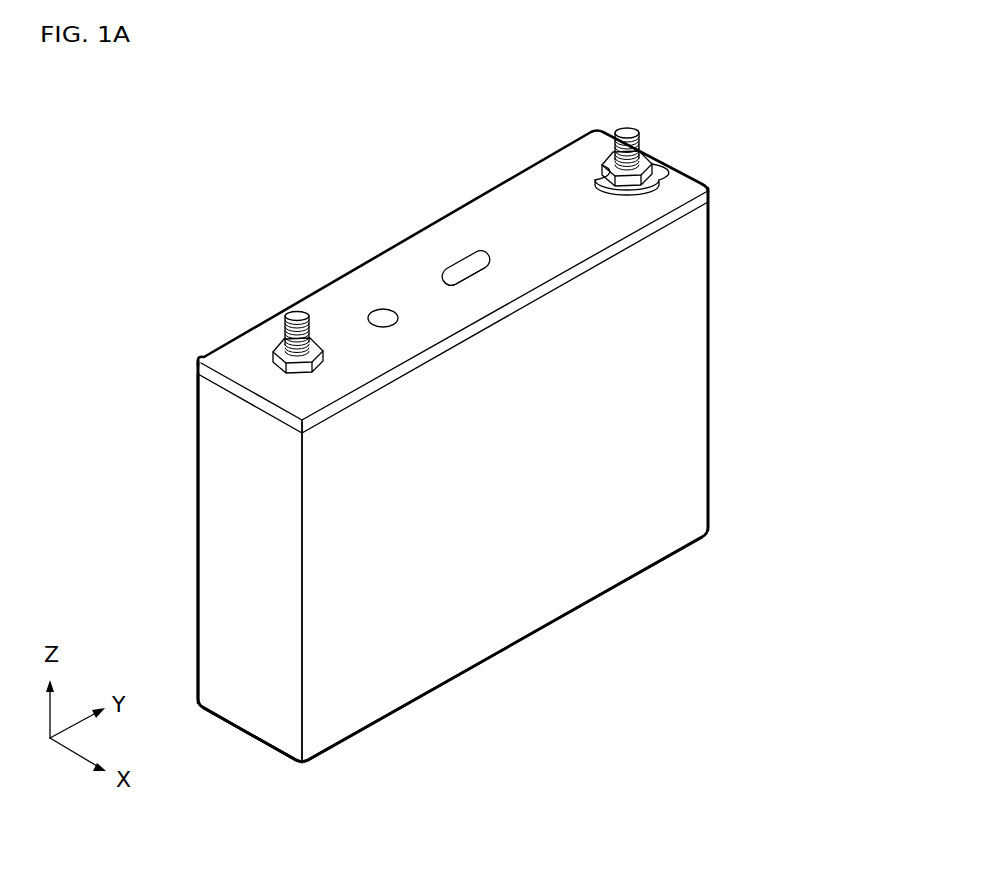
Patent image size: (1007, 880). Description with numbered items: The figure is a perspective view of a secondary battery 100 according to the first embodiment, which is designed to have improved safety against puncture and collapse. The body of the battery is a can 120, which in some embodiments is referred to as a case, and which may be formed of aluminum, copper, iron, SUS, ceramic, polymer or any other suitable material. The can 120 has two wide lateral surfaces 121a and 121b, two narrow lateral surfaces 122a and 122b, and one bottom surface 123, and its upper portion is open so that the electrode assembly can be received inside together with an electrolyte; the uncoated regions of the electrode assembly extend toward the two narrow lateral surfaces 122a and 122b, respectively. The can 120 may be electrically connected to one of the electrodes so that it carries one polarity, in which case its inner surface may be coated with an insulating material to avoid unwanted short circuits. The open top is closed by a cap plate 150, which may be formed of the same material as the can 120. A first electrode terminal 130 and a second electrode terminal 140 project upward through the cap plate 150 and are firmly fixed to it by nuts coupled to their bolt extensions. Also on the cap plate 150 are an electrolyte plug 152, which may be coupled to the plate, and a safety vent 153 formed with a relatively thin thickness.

The secondary battery 100 is at (504, 153).
The can 120 is at (722, 424).
The wide lateral surface 121a is at (198, 458).
The wide lateral surface 121b is at (331, 507).
The narrow lateral surface 122a is at (712, 318).
The narrow lateral surface 122b is at (230, 578).
The bottom surface 123 is at (455, 678).
The first electrode terminal 130 is at (271, 313).
The second electrode terminal 140 is at (641, 117).
The cap plate 150 is at (405, 260).
The electrolyte plug 152 is at (380, 309).
The safety vent 153 is at (463, 268).